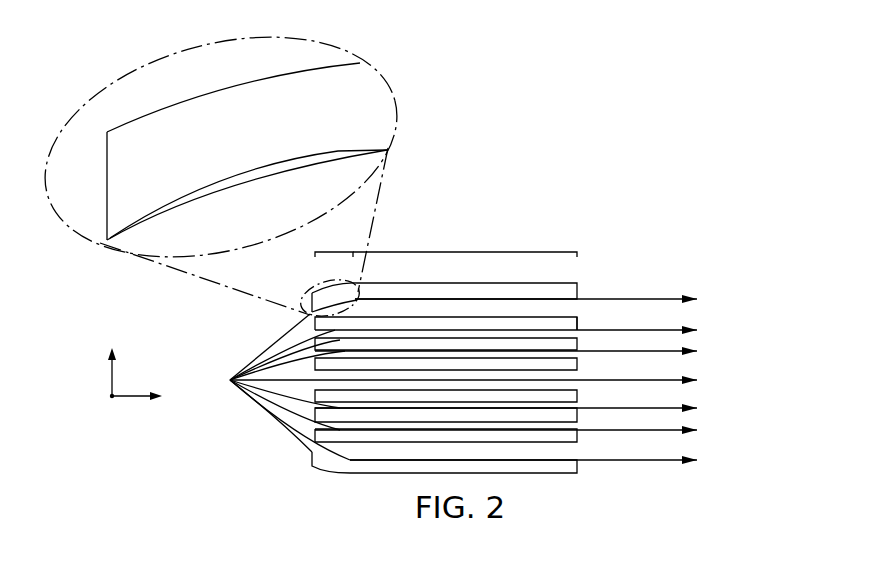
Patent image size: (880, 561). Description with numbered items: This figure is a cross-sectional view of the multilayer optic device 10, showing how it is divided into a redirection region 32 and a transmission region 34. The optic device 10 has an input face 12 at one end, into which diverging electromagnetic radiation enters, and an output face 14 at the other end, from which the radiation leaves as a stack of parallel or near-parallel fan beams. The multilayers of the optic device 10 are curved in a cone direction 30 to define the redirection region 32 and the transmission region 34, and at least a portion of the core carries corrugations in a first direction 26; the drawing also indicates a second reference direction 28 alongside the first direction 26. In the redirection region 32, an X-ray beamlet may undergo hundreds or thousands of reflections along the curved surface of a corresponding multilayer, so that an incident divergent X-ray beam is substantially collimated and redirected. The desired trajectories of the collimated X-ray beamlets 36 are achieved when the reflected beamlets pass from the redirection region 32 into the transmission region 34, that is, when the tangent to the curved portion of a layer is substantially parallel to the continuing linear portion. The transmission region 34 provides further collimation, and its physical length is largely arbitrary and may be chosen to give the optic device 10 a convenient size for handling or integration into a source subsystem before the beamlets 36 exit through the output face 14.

The optic device 10 is at (645, 63).
The input face 12 is at (303, 340).
The output face 14 is at (578, 323).
The first direction 26 is at (110, 397).
The axial direction 28 is at (128, 396).
The cone direction 30 is at (112, 372).
The redirection region 32 is at (333, 250).
The transmission region 34 is at (505, 250).
The collimated X-ray beamlets 36 is at (670, 430).